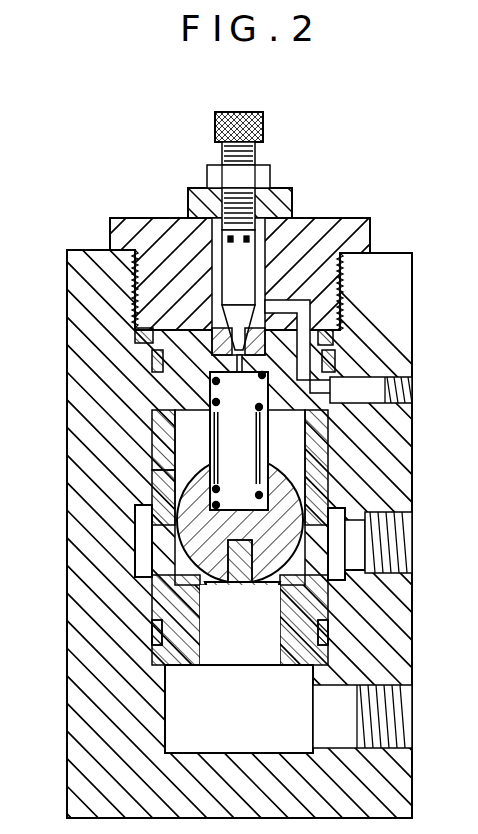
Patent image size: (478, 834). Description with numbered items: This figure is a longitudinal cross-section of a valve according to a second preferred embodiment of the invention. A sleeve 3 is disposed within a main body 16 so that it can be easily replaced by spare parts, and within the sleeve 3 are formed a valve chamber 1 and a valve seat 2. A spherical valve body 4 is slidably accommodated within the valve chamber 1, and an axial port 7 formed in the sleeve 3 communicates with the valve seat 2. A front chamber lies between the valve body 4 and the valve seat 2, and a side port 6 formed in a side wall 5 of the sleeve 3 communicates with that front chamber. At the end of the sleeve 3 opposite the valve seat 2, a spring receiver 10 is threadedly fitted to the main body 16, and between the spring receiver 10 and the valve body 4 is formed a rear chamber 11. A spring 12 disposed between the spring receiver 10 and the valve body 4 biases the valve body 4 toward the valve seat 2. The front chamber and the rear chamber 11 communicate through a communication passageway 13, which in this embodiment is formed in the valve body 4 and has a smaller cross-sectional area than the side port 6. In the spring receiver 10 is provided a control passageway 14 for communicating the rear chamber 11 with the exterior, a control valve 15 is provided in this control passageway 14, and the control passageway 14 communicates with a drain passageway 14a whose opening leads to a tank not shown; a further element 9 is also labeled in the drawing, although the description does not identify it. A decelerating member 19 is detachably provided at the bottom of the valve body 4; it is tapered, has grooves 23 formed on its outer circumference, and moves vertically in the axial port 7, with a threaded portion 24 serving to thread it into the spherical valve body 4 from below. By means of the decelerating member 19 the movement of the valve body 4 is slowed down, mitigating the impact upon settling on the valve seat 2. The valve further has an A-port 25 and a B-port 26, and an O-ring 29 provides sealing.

The valve chamber 1 is at (330, 455).
The valve seat 2 is at (345, 570).
The sleeve 3 is at (157, 603).
The spherical valve body 4 is at (200, 540).
The side wall 5 is at (330, 490).
The side port 6 is at (330, 538).
The axial port 7 is at (290, 665).
The upper inlet port 9 is at (330, 378).
The spring receiver 10 is at (110, 218).
The rear chamber 11 is at (330, 420).
The spring 12 is at (152, 455).
The communication passageway 13 is at (175, 470).
The control passageway 14 is at (165, 378).
The drain passageway 14a is at (313, 300).
The control valve 15 is at (215, 292).
The main body 16 is at (413, 640).
The decelerating member 19 is at (242, 598).
The grooves 23 is at (272, 600).
The threaded portion 24 is at (152, 585).
The A-port 25 is at (408, 530).
The B-port 26 is at (413, 748).
The O-ring 29 is at (152, 360).